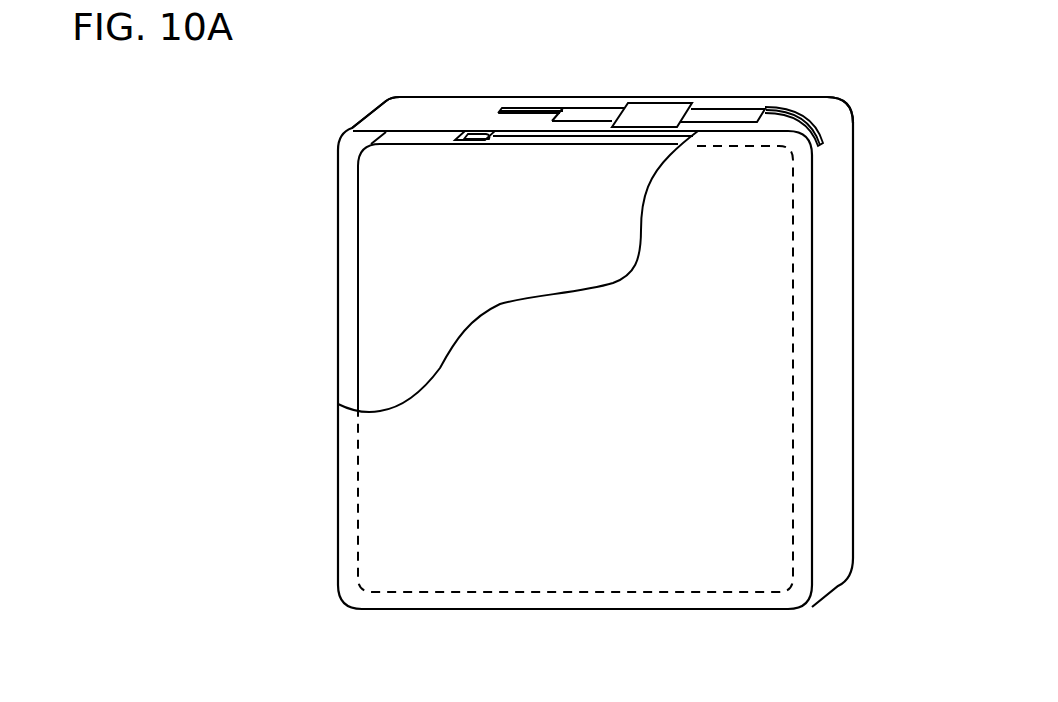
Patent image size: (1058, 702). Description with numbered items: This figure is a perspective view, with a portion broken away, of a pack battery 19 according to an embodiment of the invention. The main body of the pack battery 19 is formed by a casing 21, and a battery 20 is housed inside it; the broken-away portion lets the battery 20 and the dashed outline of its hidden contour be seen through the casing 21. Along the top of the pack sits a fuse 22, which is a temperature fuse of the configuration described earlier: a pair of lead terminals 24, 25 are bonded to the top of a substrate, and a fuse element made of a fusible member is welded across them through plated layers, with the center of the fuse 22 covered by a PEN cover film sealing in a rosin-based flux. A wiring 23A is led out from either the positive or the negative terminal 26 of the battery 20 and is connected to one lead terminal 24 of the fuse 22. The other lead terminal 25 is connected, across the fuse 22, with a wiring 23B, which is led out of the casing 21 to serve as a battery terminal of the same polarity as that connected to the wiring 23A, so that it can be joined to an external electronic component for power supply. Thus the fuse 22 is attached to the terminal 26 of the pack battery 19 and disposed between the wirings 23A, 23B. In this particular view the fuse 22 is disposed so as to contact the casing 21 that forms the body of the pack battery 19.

The pack battery 19 is at (290, 112).
The battery 20 is at (418, 583).
The casing 21 is at (428, 110).
The fuse 22 is at (665, 105).
The wiring 23A is at (527, 109).
The wiring 23B is at (797, 112).
The lead terminal 24 is at (597, 112).
The lead terminal 25 is at (740, 115).
The terminal 26 is at (537, 134).